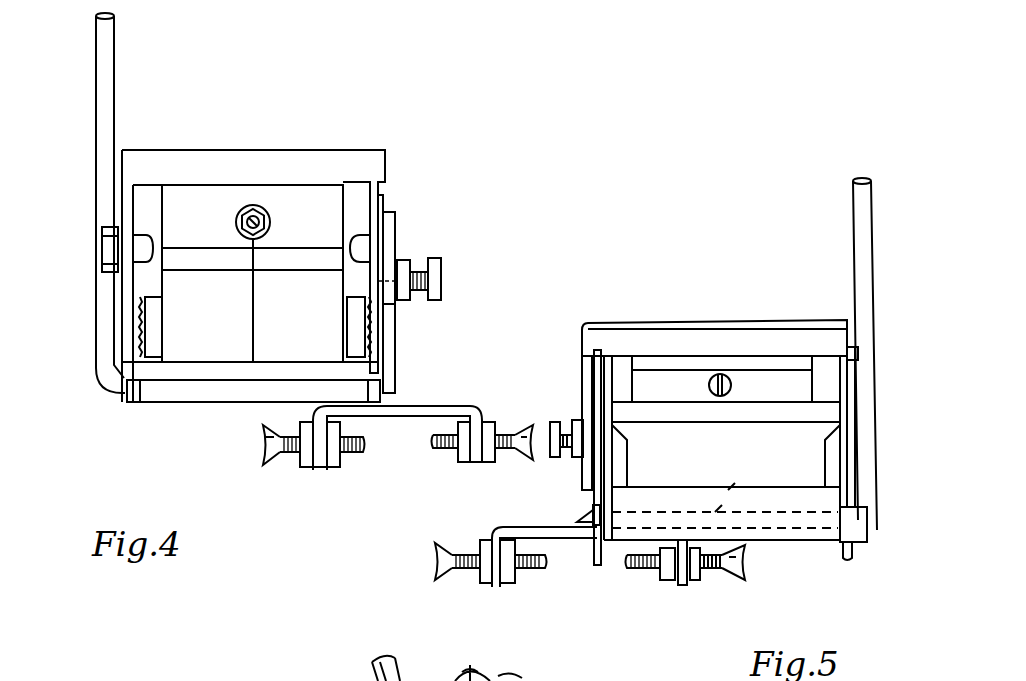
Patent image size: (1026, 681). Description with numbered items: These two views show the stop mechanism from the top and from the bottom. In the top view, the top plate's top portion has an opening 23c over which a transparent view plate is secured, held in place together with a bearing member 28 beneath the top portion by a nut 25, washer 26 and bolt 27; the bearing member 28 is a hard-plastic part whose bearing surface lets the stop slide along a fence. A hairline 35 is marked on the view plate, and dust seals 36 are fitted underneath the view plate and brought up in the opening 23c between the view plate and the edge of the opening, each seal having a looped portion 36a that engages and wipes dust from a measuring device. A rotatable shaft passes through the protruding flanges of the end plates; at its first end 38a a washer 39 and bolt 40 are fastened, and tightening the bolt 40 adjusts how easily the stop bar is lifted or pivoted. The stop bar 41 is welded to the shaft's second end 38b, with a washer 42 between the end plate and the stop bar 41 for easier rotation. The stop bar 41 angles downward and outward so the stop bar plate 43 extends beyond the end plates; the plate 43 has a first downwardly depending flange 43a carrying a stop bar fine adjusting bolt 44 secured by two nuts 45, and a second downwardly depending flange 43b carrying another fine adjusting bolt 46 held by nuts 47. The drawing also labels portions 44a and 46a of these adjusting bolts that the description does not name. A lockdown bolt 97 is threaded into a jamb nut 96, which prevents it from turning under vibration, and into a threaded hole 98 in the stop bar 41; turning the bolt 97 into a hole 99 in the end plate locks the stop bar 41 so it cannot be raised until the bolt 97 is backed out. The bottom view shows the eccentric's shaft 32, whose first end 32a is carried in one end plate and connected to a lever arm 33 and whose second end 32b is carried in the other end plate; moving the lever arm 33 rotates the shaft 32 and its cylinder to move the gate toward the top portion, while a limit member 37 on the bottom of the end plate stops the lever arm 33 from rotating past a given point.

In FIG. 4, the opening 23c is at (236, 332).
In FIG. 4, the nut 25 is at (252, 205).
In FIG. 4, the washer 26 is at (270, 226).
In FIG. 4, the bolt 27 is at (256, 224).
In FIG. 4, the bearing member 28 is at (193, 256).
In FIG. 5, the shaft 32 is at (738, 486).
In FIG. 5, the first end 32a is at (868, 545).
In FIG. 5, the second end 32b is at (590, 514).
In FIG. 5, the lever arm 33 is at (866, 291).
In FIG. 4, the hairline 35 is at (256, 336).
In FIG. 4, the dust seal 36 is at (155, 355).
In FIG. 4, the looped portion 36a is at (147, 297).
In FIG. 5, the limit member 37 is at (868, 522).
In FIG. 4, the first end 38a is at (143, 235).
In FIG. 4, the second end 38b is at (362, 195).
In FIG. 4, the washer 39 is at (125, 150).
In FIG. 4, the bolt 40 is at (108, 250).
In FIG. 4, the stop bar 41 is at (398, 362).
In FIG. 4, the washer 42 is at (388, 214).
In FIG. 4, the stop bar plate 43 is at (420, 407).
In FIG. 4, the first downwardly depending flange 43a is at (320, 469).
In FIG. 4, the second downwardly depending flange 43b is at (477, 464).
In FIG. 4, the stop bar fine adjusting bolt 44 is at (287, 456).
In FIG. 4, the bolt head 44a is at (266, 457).
In FIG. 4, the nuts 45 is at (307, 469).
In FIG. 4, the stop bar fine adjusting bolt 46 is at (500, 431).
In FIG. 4, the bolt head 46a is at (527, 426).
In FIG. 4, the nuts 47 is at (465, 464).
In FIG. 4, the jamb nut 96 is at (442, 278).
In FIG. 4, the lockdown bolt 97 is at (418, 291).
In FIG. 4, the threaded hole 98 is at (413, 260).
In FIG. 4, the hole 99 is at (393, 240).